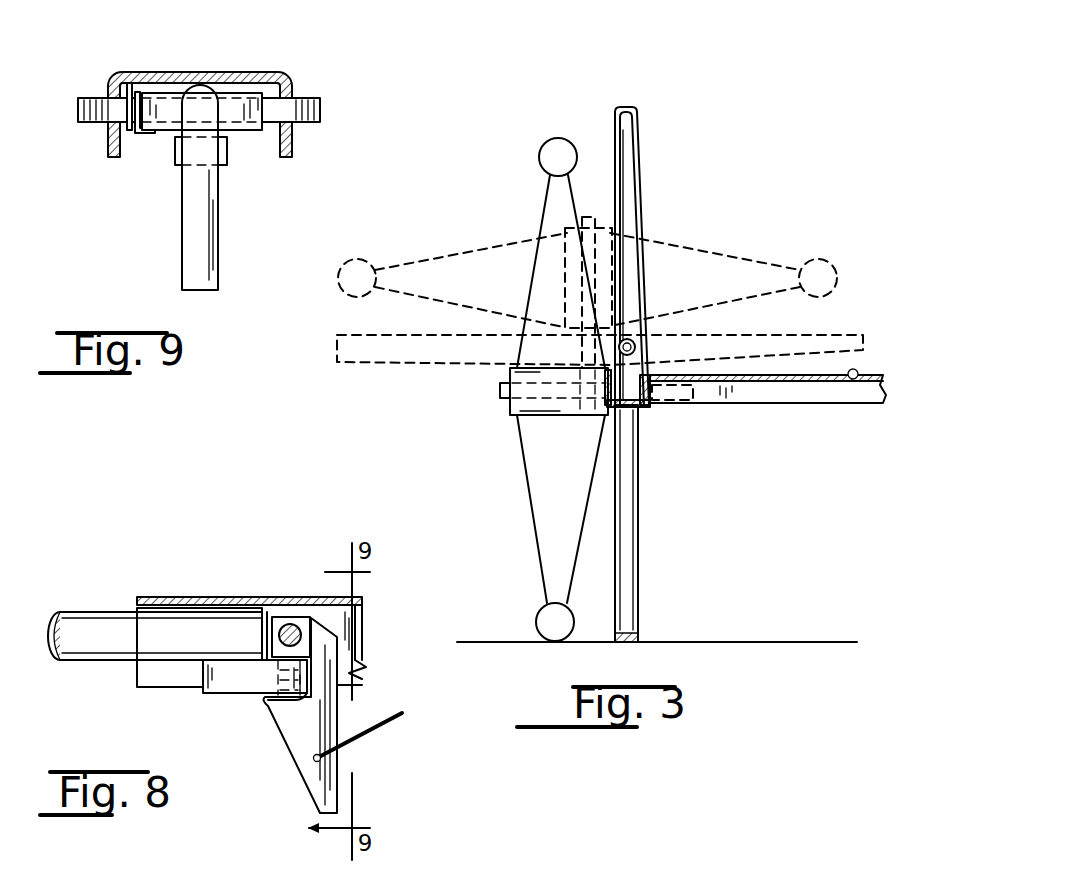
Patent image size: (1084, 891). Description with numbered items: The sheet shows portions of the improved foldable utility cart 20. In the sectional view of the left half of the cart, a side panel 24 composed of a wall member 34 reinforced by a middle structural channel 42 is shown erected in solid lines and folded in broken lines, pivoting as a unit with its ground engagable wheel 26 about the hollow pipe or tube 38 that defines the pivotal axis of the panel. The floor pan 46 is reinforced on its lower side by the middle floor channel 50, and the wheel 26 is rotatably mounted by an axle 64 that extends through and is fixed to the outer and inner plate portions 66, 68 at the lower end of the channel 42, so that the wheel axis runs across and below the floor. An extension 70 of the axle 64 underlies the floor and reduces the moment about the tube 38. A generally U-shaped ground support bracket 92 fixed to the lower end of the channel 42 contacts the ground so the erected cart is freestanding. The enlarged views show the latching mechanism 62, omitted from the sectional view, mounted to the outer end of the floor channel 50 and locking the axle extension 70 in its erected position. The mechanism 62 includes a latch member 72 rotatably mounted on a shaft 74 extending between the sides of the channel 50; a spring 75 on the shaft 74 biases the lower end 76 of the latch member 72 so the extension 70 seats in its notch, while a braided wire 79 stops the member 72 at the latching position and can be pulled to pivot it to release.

In FIG. 3, the foldable utility cart 20 is at (731, 165).
In FIG. 3, the side panel 24 is at (641, 125).
In FIG. 3, the ground engagable wheel 26 is at (717, 255).
In FIG. 3, the wall member 34 is at (643, 205).
In FIG. 3, the pipe or tube 38 is at (637, 347).
In FIG. 3, the middle structural channel 42 is at (630, 177).
In FIG. 3, the floor pan 46 is at (853, 379).
In FIG. 9, the middle floor channel 50 is at (173, 72).
In FIG. 8, the middle floor channel 50 is at (216, 597).
In FIG. 3, the middle floor channel 50 is at (787, 405).
In FIG. 9, the latching mechanism 62 is at (132, 191).
In FIG. 8, the latching mechanism 62 is at (269, 763).
In FIG. 3, the axle 64 is at (590, 215).
In FIG. 3, the outer plate portion 66 is at (607, 390).
In FIG. 3, the inner plate portion 68 is at (653, 406).
In FIG. 9, the axle extension 70 is at (233, 130).
In FIG. 8, the axle extension 70 is at (206, 690).
In FIG. 3, the axle extension 70 is at (680, 407).
In FIG. 9, the latch member 72 is at (224, 205).
In FIG. 8, the latch member 72 is at (344, 763).
In FIG. 9, the shaft 74 is at (290, 100).
In FIG. 8, the shaft 74 is at (292, 624).
In FIG. 9, the spring 75 is at (137, 136).
In FIG. 9, the lower end of latch member 76 is at (200, 173).
In FIG. 8, the lower end of latch member 76 is at (263, 702).
In FIG. 8, the braided wire 79 is at (378, 712).
In FIG. 3, the ground support bracket 92 is at (641, 583).